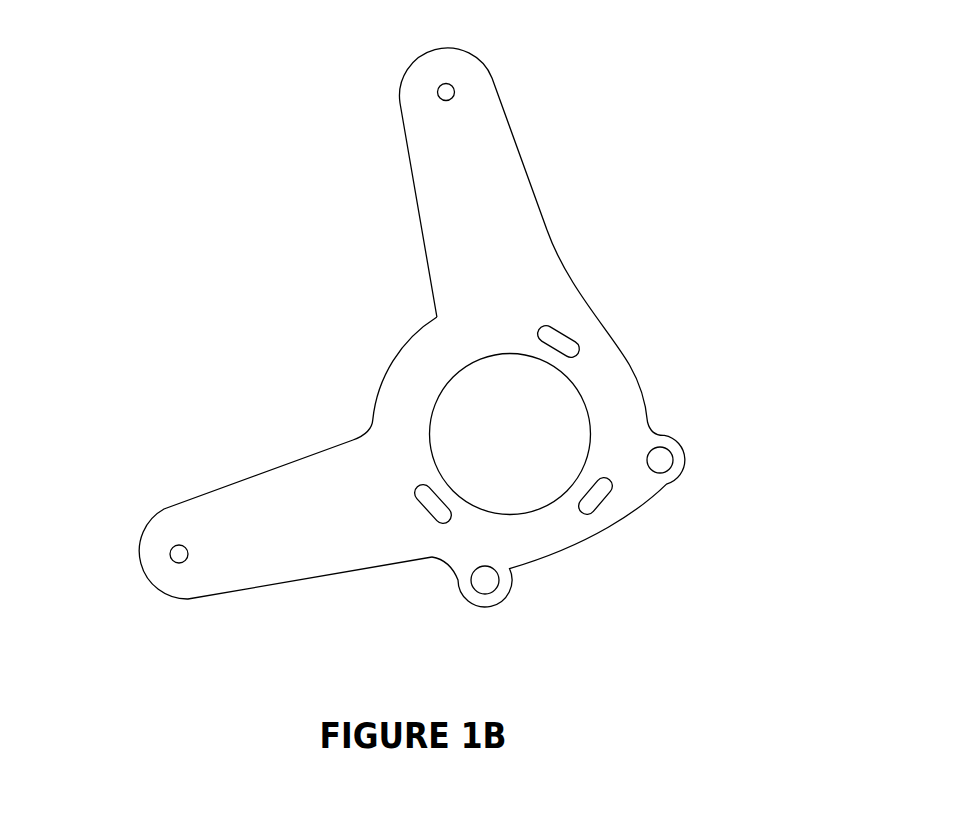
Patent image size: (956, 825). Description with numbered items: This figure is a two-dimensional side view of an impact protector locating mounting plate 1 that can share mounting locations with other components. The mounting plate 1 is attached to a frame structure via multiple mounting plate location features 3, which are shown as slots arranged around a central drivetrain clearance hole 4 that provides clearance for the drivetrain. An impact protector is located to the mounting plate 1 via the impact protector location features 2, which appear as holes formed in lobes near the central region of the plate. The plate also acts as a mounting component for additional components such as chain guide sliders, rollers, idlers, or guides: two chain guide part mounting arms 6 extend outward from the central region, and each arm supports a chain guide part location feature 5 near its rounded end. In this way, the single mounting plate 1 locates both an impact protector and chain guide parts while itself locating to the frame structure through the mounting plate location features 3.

The mounting plate 1 is at (393, 392).
The impact protector location feature 2 is at (490, 578).
The mounting plate location feature 3 is at (602, 483).
The drivetrain clearance hole 4 is at (463, 367).
The chain guide part location feature 5 is at (452, 86).
The chain guide part mounting arm 6 is at (485, 167).